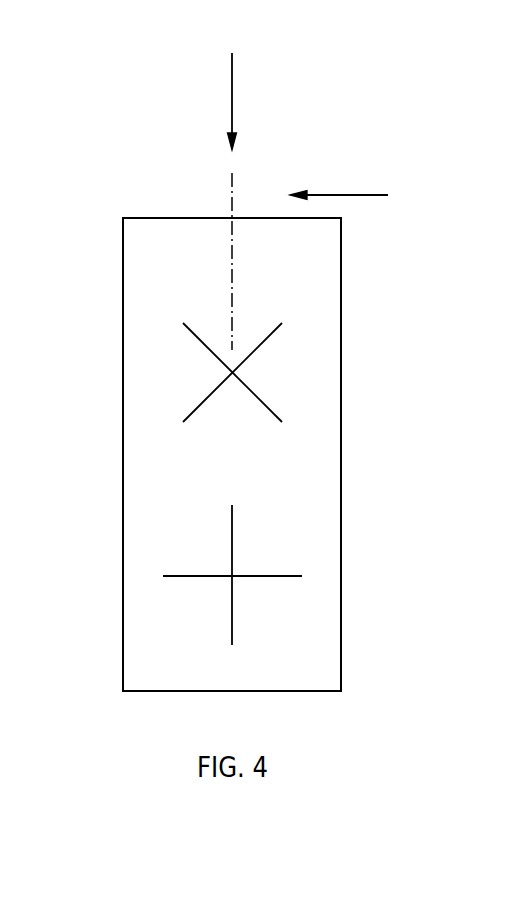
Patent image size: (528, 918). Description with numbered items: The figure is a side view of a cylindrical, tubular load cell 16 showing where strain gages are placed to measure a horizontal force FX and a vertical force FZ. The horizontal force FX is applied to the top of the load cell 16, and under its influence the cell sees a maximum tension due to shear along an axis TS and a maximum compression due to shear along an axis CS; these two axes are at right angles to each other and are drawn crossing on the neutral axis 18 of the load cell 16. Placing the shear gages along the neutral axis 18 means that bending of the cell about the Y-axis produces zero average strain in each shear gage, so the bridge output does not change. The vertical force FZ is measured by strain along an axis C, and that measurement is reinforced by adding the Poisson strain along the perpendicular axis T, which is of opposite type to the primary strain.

The load cell 16 is at (123, 379).
The neutral axis 18 is at (232, 195).
The vertical force FZ is at (229, 85).
The horizontal force FX is at (353, 199).
The axis Cs CS is at (245, 360).
The axis Ts TS is at (244, 385).
The axis T is at (240, 573).
The axis C is at (233, 590).